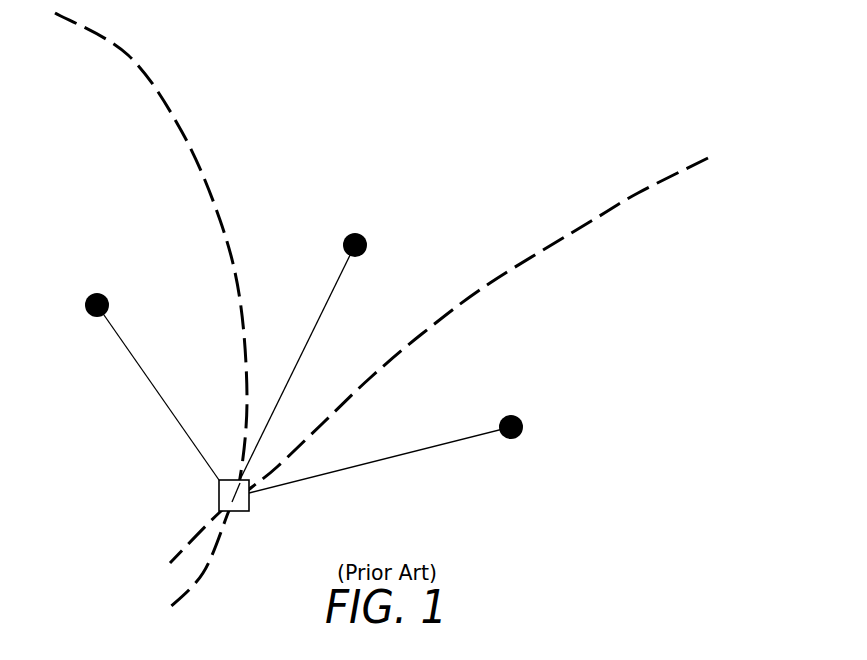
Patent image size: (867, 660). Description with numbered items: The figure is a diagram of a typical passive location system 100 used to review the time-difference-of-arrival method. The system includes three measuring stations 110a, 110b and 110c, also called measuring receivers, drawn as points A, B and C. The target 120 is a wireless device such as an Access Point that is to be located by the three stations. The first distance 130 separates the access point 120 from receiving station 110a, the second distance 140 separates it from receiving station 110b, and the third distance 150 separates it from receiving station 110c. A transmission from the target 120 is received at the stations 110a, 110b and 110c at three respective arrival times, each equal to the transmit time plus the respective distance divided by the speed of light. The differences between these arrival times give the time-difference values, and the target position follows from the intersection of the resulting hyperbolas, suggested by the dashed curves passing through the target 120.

The passive location system 100 is at (475, 100).
The measuring station 110a is at (110, 293).
The measuring station 110b is at (360, 230).
The measuring station 110c is at (515, 413).
The target 120 is at (219, 497).
The distance D1 130 is at (155, 387).
The distance D2 140 is at (320, 313).
The distance D3 150 is at (427, 447).